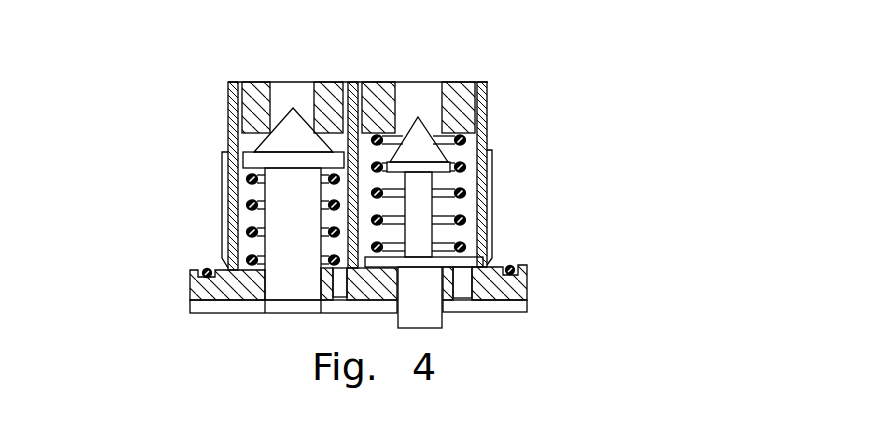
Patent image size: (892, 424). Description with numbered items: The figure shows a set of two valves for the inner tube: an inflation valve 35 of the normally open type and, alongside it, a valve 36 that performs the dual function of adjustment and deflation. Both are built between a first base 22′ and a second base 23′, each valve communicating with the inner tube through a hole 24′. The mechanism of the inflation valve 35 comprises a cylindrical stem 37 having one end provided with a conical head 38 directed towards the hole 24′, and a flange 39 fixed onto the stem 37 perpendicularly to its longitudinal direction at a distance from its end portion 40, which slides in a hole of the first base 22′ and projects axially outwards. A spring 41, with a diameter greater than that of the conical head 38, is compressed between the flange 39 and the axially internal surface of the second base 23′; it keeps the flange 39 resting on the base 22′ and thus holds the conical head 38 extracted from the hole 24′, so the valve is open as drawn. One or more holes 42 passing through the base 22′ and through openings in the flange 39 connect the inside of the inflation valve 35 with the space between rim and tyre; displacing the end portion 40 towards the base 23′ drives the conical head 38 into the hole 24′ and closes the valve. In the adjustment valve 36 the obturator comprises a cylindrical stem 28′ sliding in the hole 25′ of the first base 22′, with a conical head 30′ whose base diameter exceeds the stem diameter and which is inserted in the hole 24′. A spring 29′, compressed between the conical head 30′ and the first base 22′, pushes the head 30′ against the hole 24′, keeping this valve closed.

The first base 22′ is at (240, 285).
The second base 23′ is at (485, 104).
The hole 24′ is at (283, 93).
The hole of the first base 25′ is at (348, 332).
The cylindrical stem 28′ is at (282, 193).
The spring 29′ is at (260, 231).
The conical head 30′ is at (289, 140).
The inflation valve 35 is at (500, 124).
The valve 36 is at (205, 121).
The cylindrical stem 37 is at (422, 198).
The conical head 38 is at (425, 149).
The flange 39 is at (486, 268).
The end portion 40 is at (422, 302).
The spring 41 is at (447, 225).
The holes 42 is at (460, 285).